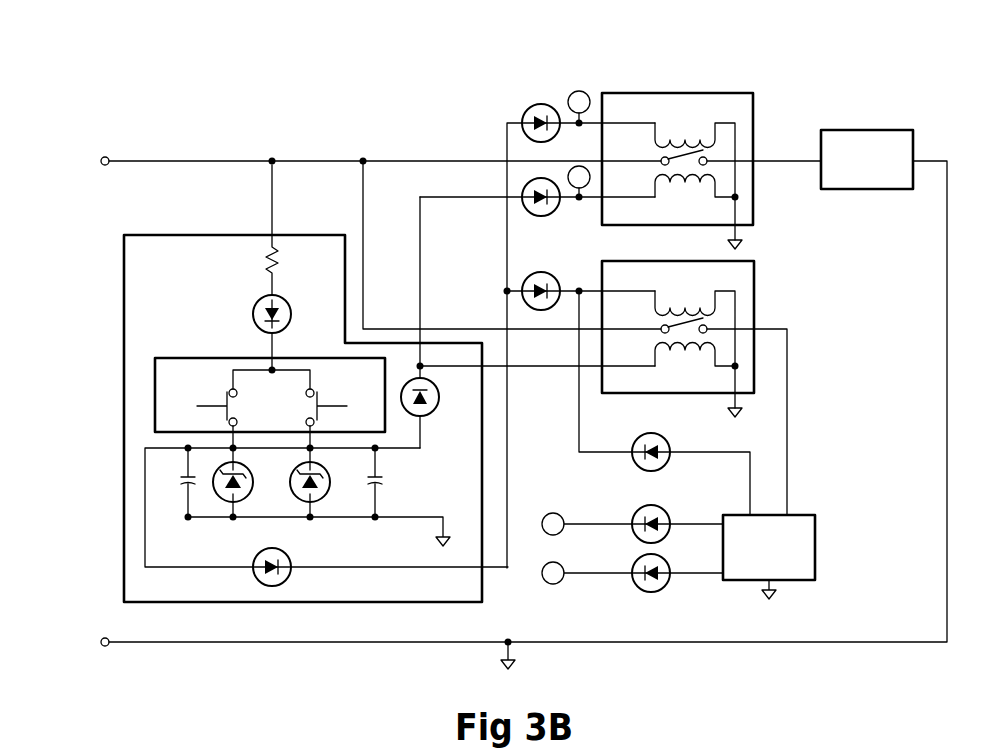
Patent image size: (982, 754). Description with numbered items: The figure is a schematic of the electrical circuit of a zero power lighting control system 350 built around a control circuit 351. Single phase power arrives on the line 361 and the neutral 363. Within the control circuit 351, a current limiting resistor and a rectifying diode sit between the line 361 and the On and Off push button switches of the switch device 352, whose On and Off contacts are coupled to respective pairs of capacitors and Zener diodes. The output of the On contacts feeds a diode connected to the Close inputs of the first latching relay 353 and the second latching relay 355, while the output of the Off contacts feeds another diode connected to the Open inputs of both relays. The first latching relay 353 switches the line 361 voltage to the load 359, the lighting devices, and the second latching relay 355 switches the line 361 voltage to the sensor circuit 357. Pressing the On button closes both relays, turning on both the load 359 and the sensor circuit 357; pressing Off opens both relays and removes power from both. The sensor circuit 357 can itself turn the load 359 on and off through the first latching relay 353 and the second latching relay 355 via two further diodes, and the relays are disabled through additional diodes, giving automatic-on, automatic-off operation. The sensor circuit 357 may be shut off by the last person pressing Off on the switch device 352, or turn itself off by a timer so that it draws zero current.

The zero power lighting control system 350 is at (203, 61).
The control circuit 351 is at (117, 608).
The switch device 352 is at (193, 358).
The first latching relay 353 is at (673, 93).
The second latching relay 355 is at (755, 297).
The sensor circuit 357 is at (815, 548).
The load 359 is at (866, 130).
The line 361 is at (105, 157).
The neutral 363 is at (105, 646).